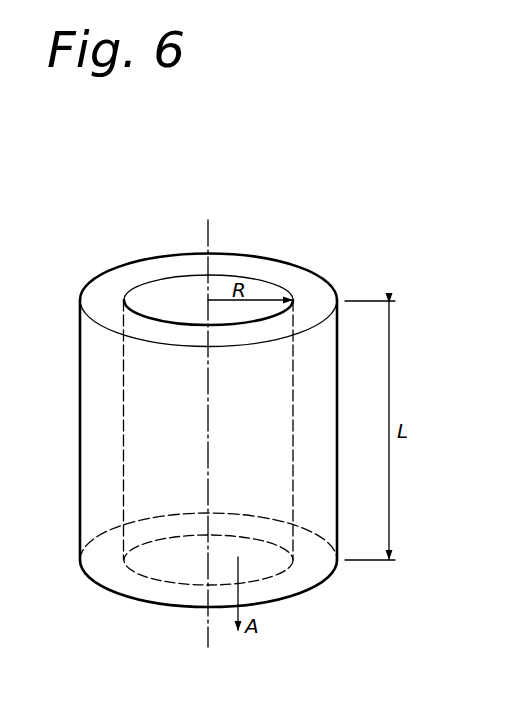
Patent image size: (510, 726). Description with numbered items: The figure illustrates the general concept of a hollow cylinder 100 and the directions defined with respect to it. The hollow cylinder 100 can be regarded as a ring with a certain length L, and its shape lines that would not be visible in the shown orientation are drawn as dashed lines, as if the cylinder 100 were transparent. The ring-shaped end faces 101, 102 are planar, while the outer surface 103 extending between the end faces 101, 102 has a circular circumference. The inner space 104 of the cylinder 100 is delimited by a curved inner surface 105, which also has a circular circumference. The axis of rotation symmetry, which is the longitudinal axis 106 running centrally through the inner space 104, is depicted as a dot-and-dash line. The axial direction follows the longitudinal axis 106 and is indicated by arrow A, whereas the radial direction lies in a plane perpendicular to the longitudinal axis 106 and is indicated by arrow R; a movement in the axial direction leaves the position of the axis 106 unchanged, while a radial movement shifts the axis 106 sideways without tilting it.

The hollow cylinder 100 is at (96, 478).
The ring-shaped end face 101 is at (173, 267).
The ring-shaped end face 102 is at (125, 594).
The outer surface 103 is at (99, 408).
The inner space 104 is at (160, 293).
The inner surface 105 is at (134, 290).
The longitudinal axis 106 is at (208, 232).